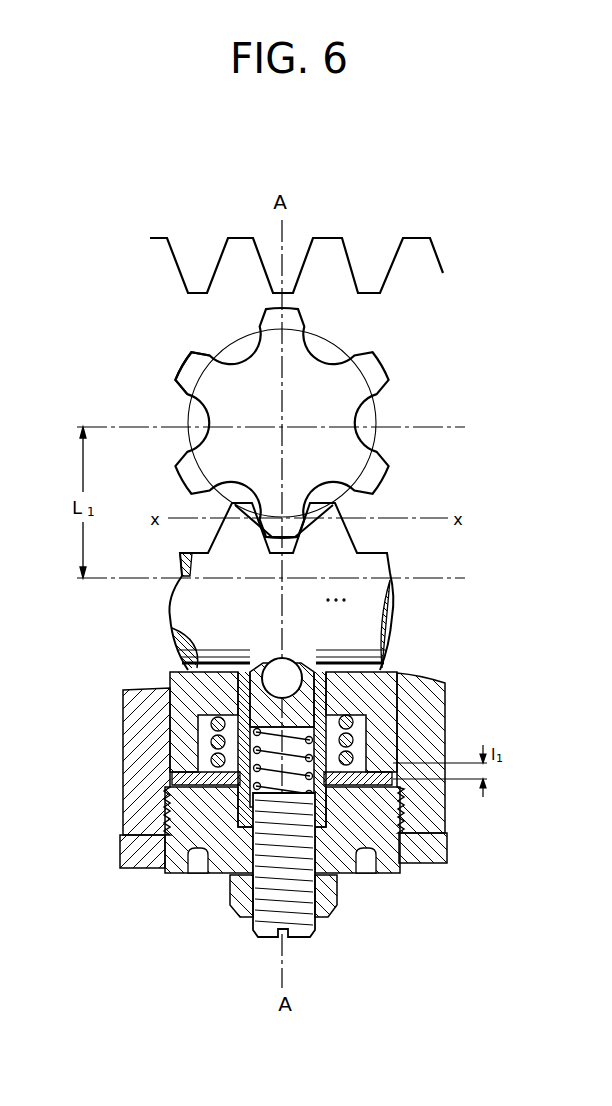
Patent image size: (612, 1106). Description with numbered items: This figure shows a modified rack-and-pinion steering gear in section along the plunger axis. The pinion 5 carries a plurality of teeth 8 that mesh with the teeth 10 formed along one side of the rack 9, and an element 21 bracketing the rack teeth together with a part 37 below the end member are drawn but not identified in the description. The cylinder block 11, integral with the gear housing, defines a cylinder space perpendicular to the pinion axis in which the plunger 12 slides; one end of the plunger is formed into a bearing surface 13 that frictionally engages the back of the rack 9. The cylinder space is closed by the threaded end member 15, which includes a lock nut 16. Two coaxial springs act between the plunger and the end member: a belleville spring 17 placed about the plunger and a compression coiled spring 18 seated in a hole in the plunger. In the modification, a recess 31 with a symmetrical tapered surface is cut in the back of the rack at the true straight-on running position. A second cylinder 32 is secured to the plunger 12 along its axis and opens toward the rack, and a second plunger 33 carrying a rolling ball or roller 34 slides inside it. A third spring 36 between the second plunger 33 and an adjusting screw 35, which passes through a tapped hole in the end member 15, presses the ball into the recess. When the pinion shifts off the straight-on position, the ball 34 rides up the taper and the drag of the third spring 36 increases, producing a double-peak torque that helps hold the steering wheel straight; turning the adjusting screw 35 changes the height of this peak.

The pinion 5 is at (383, 362).
The teeth 8 is at (198, 368).
The rack 9 is at (387, 630).
The teeth 10 is at (346, 533).
The cylinder block 11 is at (438, 702).
The plunger 12 is at (170, 686).
The bearing surface 13 is at (172, 628).
The end member 15 is at (350, 867).
The lock nut 16 is at (435, 860).
The belleville spring 17 is at (185, 775).
The compression coiled spring 18 is at (213, 745).
The thread profile 21 is at (445, 162).
The recess 31 is at (265, 662).
The second cylinder 32 is at (318, 672).
The second plunger 33 is at (252, 668).
The rolling ball or roller 34 is at (300, 663).
The adjusting screw 35 is at (265, 925).
The third spring 36 is at (328, 720).
The lock nut 37 is at (232, 905).